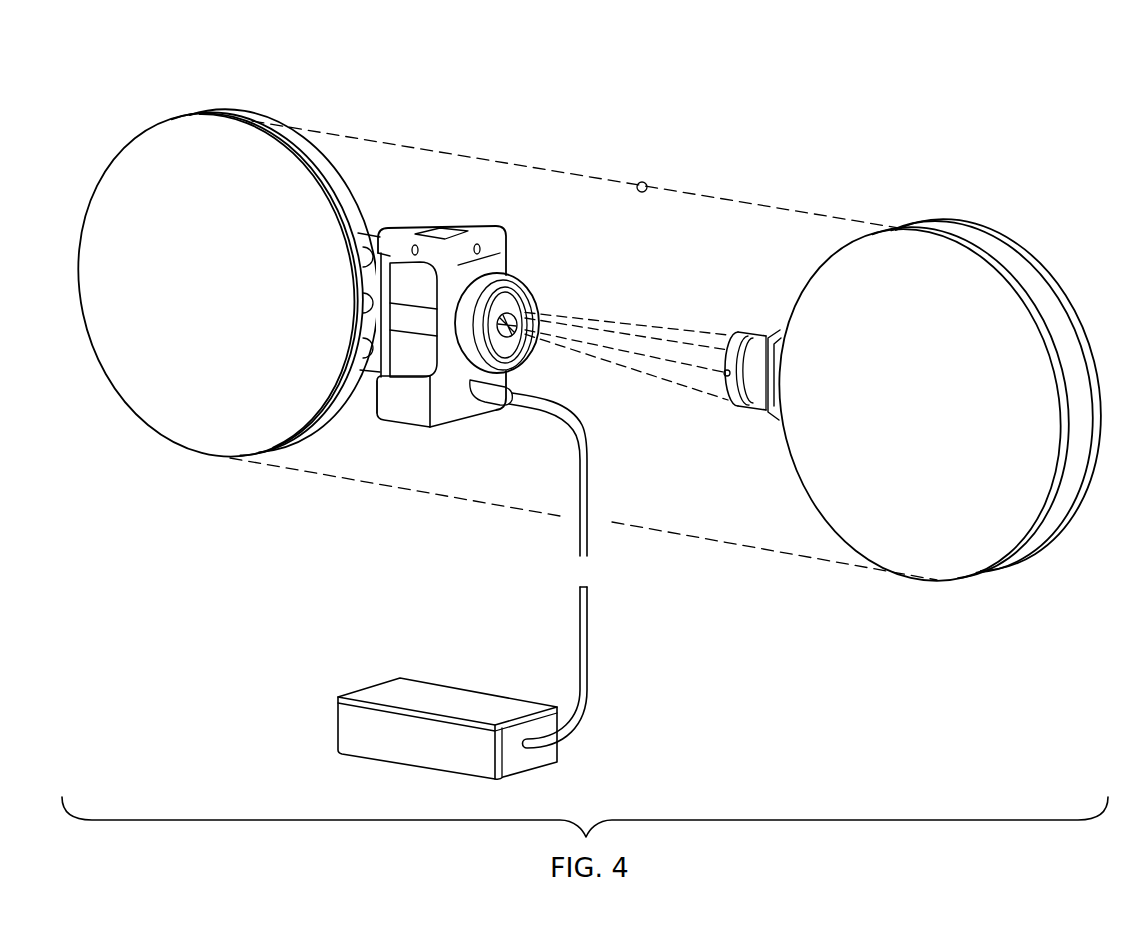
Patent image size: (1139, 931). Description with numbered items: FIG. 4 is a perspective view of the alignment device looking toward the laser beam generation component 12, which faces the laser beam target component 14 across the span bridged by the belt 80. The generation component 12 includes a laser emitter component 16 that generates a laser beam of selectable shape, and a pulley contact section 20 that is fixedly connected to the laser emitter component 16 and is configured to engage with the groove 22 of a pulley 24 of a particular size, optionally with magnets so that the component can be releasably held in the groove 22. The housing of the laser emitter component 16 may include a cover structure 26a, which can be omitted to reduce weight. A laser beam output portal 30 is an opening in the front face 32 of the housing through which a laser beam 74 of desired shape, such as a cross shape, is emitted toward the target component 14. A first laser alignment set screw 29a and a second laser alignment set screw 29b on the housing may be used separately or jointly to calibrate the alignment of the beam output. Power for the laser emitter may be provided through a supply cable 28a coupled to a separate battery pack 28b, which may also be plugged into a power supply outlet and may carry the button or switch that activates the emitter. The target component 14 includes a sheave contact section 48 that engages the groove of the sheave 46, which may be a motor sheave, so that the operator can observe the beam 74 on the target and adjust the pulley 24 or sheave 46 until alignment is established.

The laser beam generation component 12 is at (489, 300).
The laser beam target component 14 is at (908, 396).
The laser emitter component 16 is at (432, 385).
The pulley contact section 20 is at (383, 228).
The groove 22 is at (277, 118).
The pulley 24 is at (173, 128).
The cover structure 26a is at (388, 412).
The supply cable 28a is at (583, 660).
The battery pack 28b is at (562, 760).
The first laser alignment set screw 29a is at (416, 246).
The second laser alignment set screw 29b is at (479, 246).
The laser beam output portal 30 is at (510, 343).
The front face 32 is at (513, 307).
The sheave 46 is at (910, 238).
The sheave contact section 48 is at (772, 415).
The laser beam 74 is at (688, 330).
The belt 80 is at (645, 183).